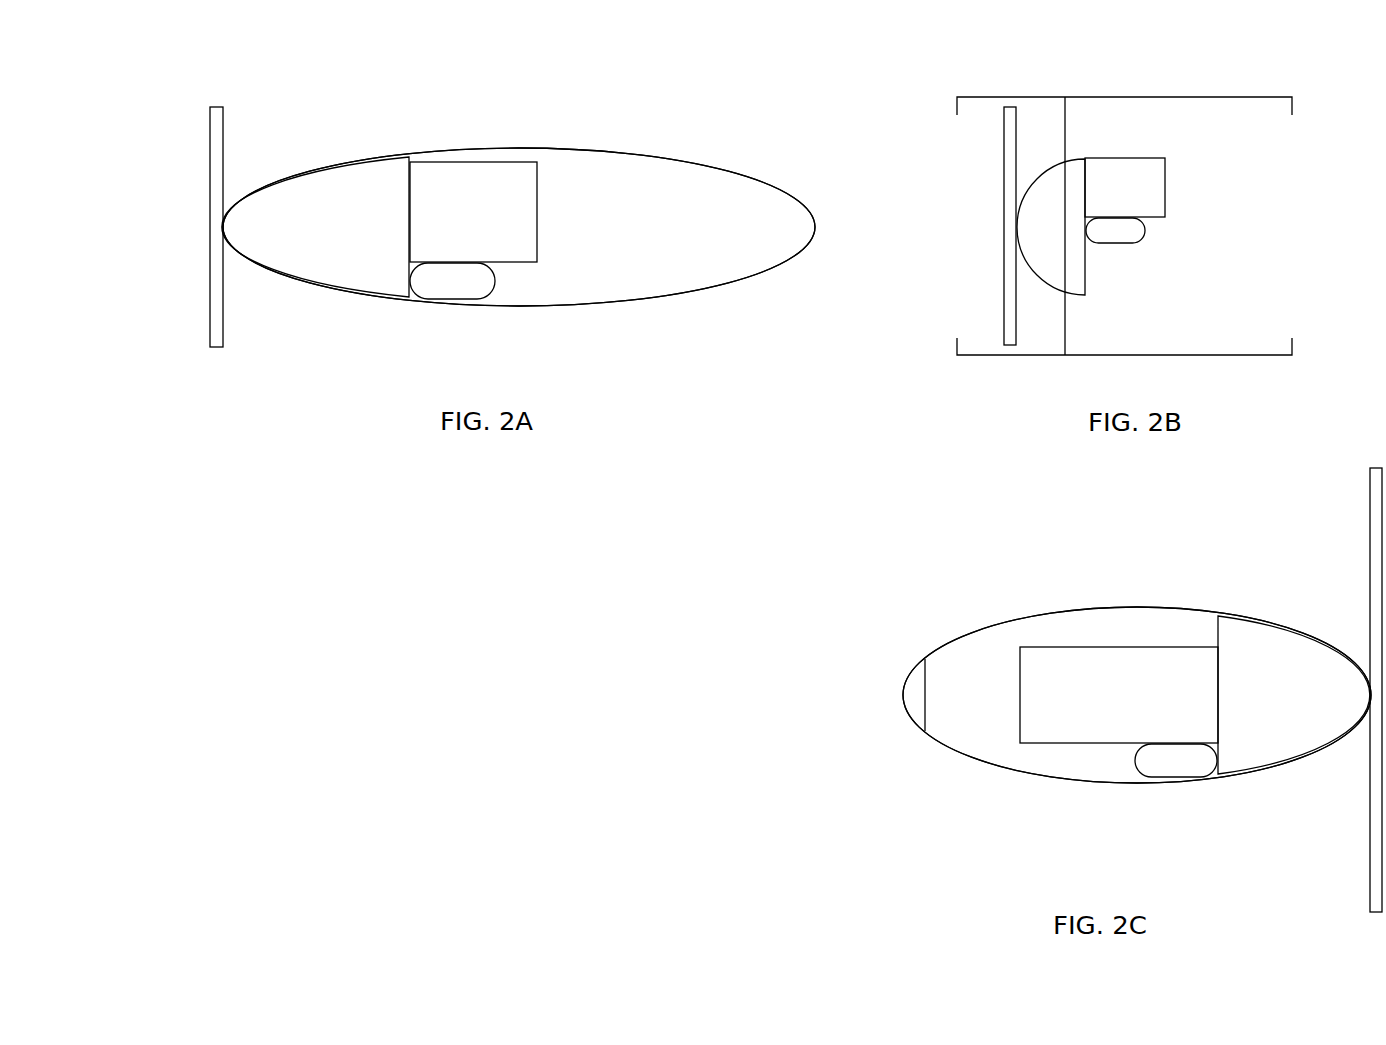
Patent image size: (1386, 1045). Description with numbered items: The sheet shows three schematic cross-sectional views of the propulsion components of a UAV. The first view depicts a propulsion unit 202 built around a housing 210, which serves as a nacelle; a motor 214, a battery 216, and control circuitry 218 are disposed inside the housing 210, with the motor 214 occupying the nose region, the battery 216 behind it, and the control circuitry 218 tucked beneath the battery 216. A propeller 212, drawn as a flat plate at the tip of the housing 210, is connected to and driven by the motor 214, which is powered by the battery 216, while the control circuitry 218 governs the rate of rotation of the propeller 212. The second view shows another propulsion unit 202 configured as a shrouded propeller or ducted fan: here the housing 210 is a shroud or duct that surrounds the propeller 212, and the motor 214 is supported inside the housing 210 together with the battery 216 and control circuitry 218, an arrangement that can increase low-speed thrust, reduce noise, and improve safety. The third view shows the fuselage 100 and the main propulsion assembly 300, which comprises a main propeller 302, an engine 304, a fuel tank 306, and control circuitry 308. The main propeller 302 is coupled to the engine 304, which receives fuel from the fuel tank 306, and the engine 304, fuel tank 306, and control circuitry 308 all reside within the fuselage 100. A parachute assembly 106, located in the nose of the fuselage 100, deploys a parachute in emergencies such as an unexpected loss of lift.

In FIG. 2A, the propulsion unit 202 is at (208, 62).
In FIG. 2B, the propulsion unit 202 is at (946, 78).
In FIG. 2A, the housing 210 is at (619, 147).
In FIG. 2B, the housing 210 is at (1098, 97).
In FIG. 2A, the propeller 212 is at (223, 310).
In FIG. 2B, the propeller 212 is at (1004, 320).
In FIG. 2A, the motor 214 is at (343, 252).
In FIG. 2B, the motor 214 is at (1068, 254).
In FIG. 2A, the battery 216 is at (488, 246).
In FIG. 2B, the battery 216 is at (1139, 196).
In FIG. 2A, the control circuitry 218 is at (468, 292).
In FIG. 2B, the control circuitry 218 is at (1131, 242).
In FIG. 2C, the main propulsion assembly 300 is at (1223, 560).
In FIG. 2C, the fuselage 100 is at (1078, 781).
In FIG. 2C, the parachute assembly 106 is at (912, 696).
In FIG. 2C, the main propeller 302 is at (1370, 878).
In FIG. 2C, the engine 304 is at (1304, 719).
In FIG. 2C, the fuel tank 306 is at (1134, 719).
In FIG. 2C, the control circuitry 308 is at (1192, 772).